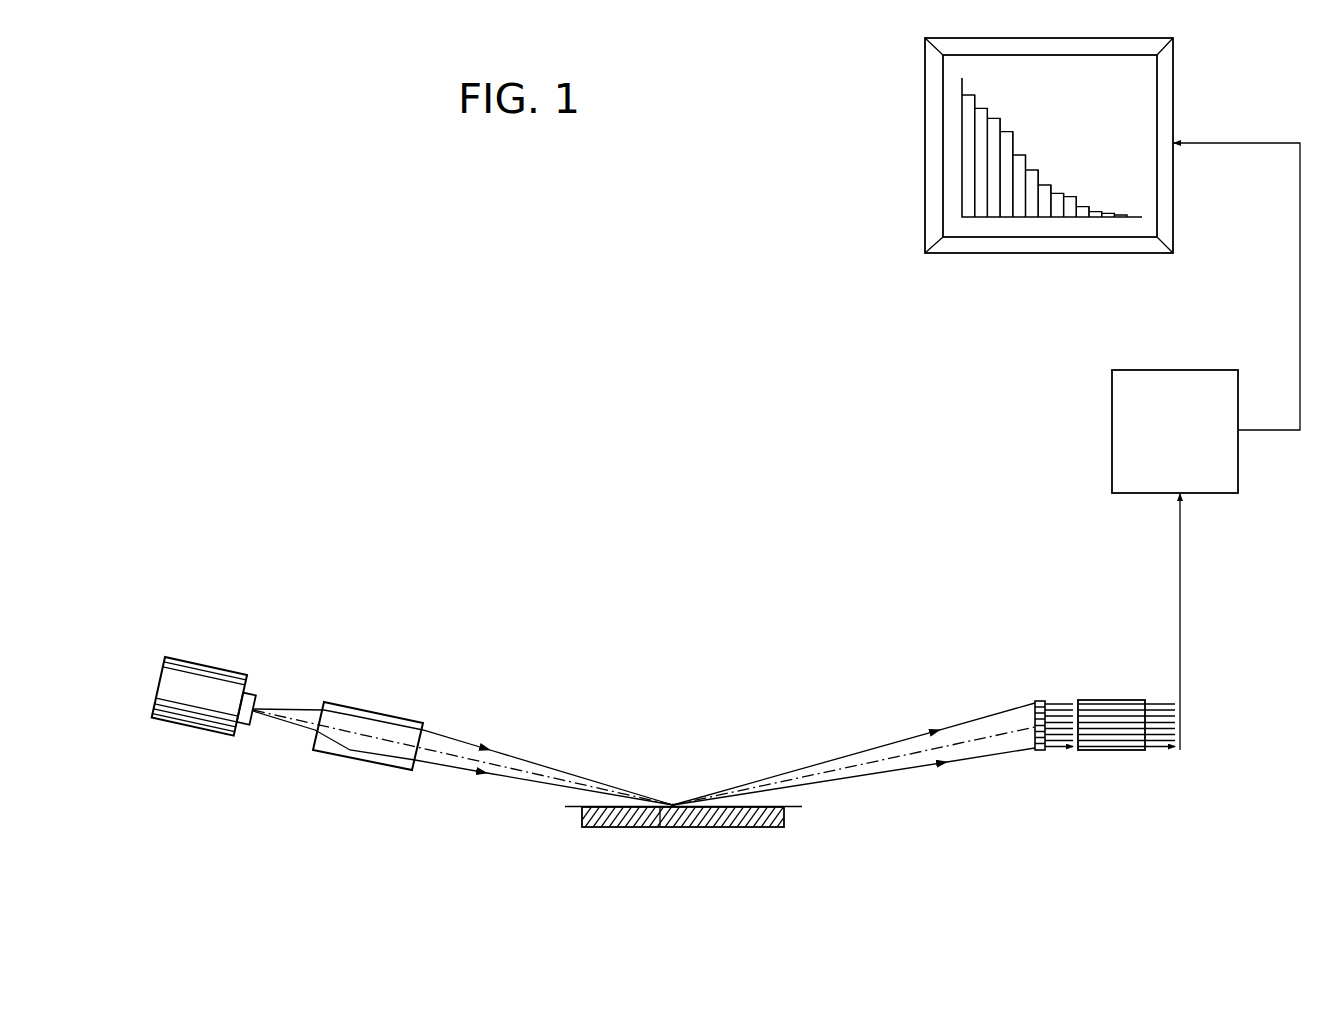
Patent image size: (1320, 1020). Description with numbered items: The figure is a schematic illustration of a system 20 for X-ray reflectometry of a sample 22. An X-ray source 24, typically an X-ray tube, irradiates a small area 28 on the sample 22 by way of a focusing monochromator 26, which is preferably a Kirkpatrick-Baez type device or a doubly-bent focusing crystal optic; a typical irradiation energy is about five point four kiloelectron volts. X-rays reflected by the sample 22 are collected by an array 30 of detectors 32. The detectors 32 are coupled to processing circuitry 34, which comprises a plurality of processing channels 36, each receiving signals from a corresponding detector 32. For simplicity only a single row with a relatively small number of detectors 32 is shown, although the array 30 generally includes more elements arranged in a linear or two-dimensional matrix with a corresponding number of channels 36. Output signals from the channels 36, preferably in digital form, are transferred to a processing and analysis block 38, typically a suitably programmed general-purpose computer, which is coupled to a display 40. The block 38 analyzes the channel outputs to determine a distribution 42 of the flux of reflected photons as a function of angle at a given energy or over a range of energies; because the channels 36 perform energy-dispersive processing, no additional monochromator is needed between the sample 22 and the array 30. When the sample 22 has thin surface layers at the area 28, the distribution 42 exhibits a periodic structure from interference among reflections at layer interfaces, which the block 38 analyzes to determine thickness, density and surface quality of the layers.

The system 20 is at (345, 292).
The sample 22 is at (700, 829).
The X-ray source 24 is at (207, 662).
The focusing monochromator 26 is at (410, 720).
The small area 28 is at (677, 803).
The array 30 is at (1040, 702).
The detectors 32 is at (1036, 735).
The processing circuitry 34 is at (1098, 702).
The processing channels 36 is at (1096, 736).
The processing and analysis block 38 is at (1148, 494).
The display 40 is at (925, 135).
The distribution 42 is at (1091, 118).